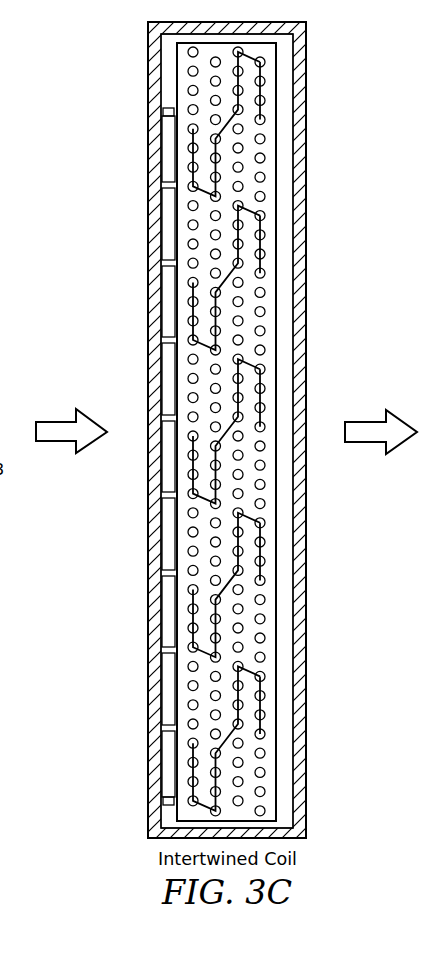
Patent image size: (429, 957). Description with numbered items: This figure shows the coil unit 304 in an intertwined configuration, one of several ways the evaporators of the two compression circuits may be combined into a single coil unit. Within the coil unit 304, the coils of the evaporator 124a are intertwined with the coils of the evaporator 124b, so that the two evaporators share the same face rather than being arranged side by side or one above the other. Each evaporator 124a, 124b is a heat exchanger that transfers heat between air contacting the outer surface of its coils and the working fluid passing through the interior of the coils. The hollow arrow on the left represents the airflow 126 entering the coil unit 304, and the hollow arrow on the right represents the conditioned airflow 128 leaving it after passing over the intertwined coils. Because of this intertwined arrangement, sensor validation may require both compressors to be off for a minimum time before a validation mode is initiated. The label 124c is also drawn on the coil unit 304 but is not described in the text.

The coil unit 304 is at (130, 45).
The evaporator 124a is at (190, 150).
The evaporator 124b is at (263, 238).
The intertwined coil wire 124c is at (213, 428).
The airflow 126 is at (67, 421).
The conditioned airflow 128 is at (365, 443).